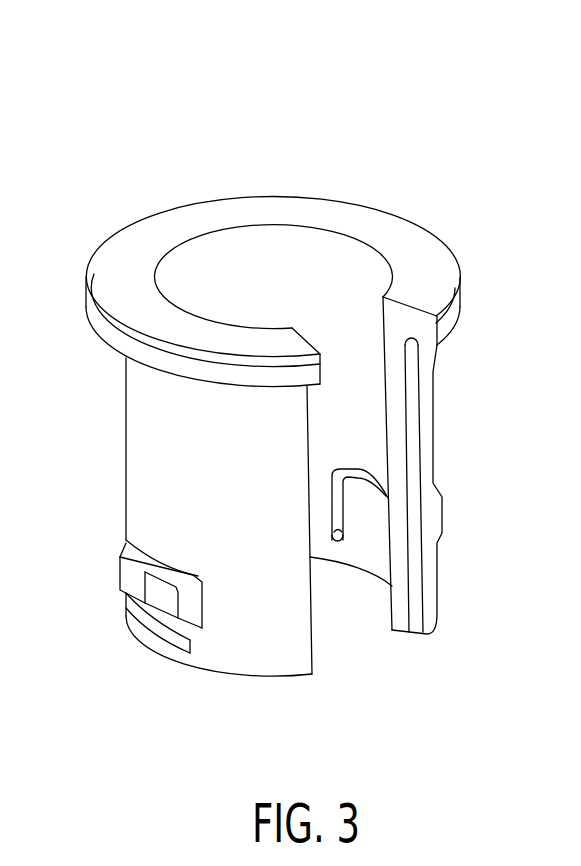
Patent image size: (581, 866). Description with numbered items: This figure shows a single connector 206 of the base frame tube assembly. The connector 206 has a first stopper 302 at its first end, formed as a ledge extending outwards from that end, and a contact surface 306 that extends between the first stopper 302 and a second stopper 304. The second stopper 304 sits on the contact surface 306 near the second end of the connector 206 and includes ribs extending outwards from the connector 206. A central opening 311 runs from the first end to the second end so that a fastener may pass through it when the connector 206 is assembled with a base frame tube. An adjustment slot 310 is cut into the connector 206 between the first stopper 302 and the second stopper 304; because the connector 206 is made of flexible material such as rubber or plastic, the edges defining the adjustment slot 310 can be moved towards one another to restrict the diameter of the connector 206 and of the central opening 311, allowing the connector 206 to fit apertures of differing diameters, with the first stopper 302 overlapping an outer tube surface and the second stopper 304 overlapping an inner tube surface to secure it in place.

The connector 206 is at (74, 87).
The first stopper 302 is at (86, 280).
The second stopper 304 is at (118, 582).
The contact surface 306 is at (125, 473).
The adjustment slot 310 is at (368, 638).
The central opening 311 is at (315, 232).